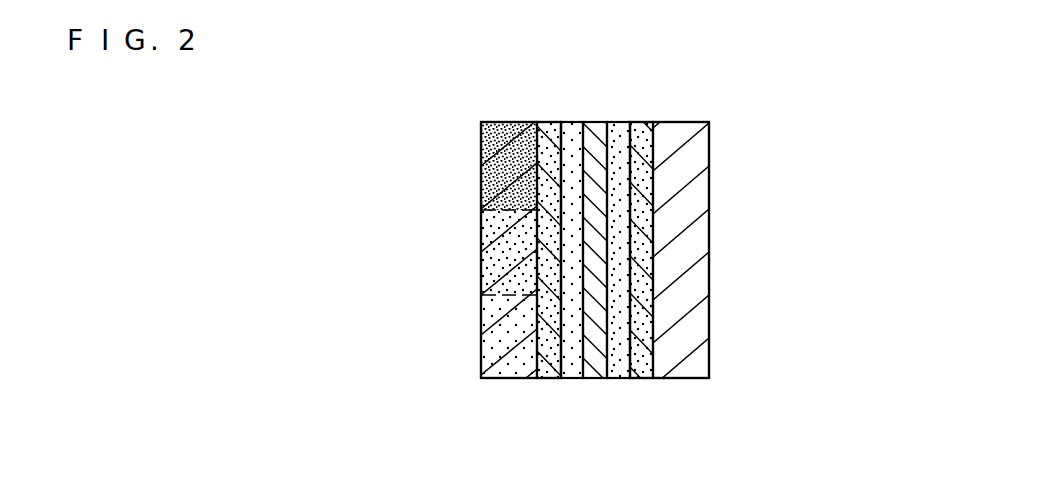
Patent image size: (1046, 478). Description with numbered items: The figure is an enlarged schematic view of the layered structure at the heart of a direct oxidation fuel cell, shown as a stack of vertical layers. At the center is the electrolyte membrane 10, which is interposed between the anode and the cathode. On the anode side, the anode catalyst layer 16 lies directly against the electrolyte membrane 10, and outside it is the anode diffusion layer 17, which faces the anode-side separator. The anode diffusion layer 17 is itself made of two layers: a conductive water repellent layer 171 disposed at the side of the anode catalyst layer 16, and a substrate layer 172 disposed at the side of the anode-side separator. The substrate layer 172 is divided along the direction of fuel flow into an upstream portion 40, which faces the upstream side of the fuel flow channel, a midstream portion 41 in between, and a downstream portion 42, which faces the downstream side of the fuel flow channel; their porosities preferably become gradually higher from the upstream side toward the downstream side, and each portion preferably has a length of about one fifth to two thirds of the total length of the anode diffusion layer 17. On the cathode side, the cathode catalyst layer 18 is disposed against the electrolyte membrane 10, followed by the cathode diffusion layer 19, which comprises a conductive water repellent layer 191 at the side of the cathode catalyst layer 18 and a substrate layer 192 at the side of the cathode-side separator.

The electrolyte membrane 10 is at (597, 135).
The anode catalyst layer 16 is at (572, 130).
The anode diffusion layer 17 is at (560, 115).
The cathode catalyst layer 18 is at (617, 135).
The cathode diffusion layer 19 is at (707, 115).
The upstream portion 40 is at (500, 178).
The midstream portion 41 is at (498, 249).
The downstream portion 42 is at (492, 334).
The conductive water repellent layer 171 is at (548, 366).
The substrate layer 172 is at (425, 122).
The conductive water repellent layer 191 is at (643, 366).
The substrate layer 192 is at (697, 277).